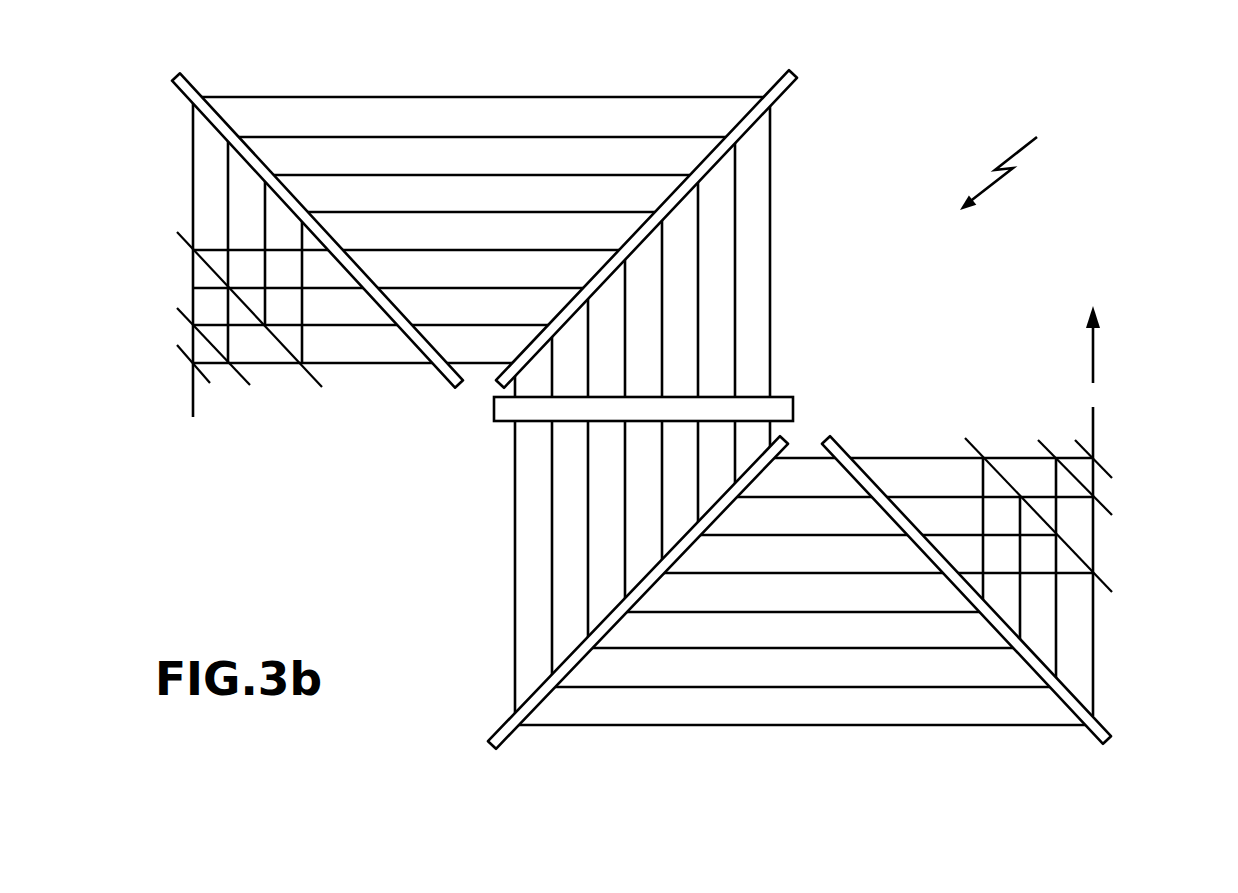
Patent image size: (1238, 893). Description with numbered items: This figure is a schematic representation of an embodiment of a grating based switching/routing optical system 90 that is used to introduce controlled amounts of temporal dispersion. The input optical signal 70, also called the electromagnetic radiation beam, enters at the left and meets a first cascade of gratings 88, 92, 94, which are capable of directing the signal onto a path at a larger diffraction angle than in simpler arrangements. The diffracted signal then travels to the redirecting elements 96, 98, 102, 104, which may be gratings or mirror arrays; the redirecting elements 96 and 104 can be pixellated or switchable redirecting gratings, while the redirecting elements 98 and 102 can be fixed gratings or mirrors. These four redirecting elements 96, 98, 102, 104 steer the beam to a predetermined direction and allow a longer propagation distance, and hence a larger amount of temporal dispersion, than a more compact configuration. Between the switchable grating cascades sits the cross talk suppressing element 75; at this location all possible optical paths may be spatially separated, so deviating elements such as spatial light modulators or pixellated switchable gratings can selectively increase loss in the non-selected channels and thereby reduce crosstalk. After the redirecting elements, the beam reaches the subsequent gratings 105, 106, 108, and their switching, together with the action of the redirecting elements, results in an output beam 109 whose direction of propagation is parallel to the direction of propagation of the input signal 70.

The input optical signal 70 is at (190, 403).
The cross talk suppressing element 75 is at (493, 408).
The grating 88 is at (180, 352).
The system 90 is at (1010, 159).
The grating 92 is at (180, 312).
The grating 94 is at (180, 237).
The redirecting element 96 is at (178, 97).
The redirecting element 98 is at (775, 85).
The redirecting element 102 is at (505, 742).
The redirecting element 104 is at (1102, 740).
The grating 105 is at (1102, 582).
The grating 106 is at (1102, 508).
The grating 108 is at (1102, 465).
The output beam 109 is at (1097, 362).